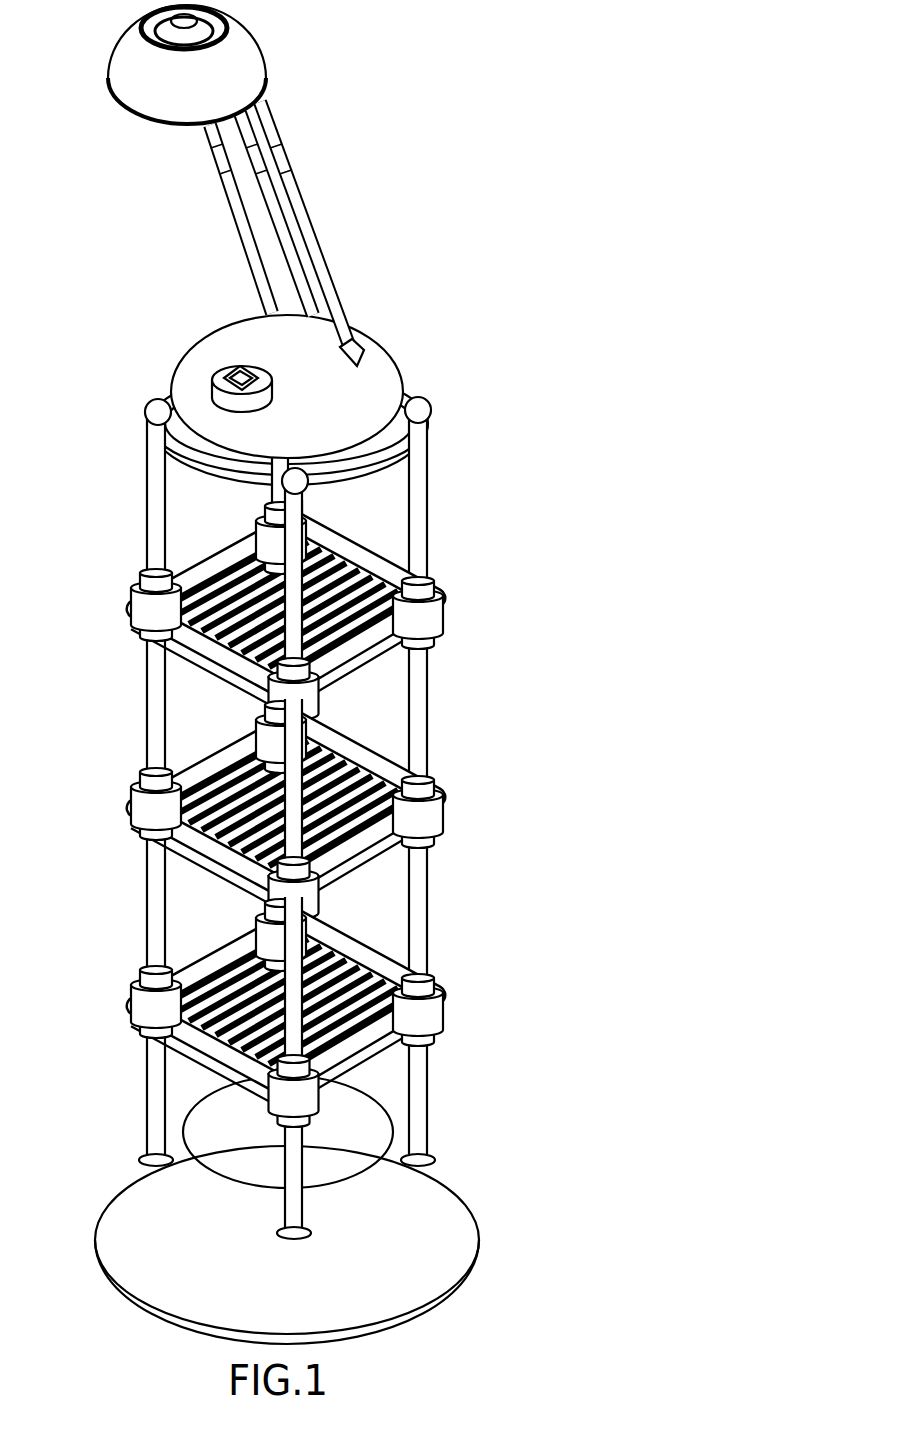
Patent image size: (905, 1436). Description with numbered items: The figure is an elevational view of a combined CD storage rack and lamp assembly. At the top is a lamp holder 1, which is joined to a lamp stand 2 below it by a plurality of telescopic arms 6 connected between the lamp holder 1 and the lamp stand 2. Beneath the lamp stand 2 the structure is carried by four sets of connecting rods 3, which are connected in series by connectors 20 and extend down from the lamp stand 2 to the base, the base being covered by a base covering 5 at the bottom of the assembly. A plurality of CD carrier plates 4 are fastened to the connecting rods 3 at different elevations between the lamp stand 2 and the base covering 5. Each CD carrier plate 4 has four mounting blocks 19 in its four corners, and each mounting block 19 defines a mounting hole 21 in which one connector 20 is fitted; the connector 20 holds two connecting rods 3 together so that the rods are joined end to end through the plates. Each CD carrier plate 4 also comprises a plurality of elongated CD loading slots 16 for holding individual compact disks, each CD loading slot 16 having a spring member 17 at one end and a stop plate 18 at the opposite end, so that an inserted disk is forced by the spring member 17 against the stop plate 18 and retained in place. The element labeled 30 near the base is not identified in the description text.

The lamp holder 1 is at (240, 60).
The lamp stand 2 is at (343, 395).
The connecting rods 3 is at (422, 552).
The CD carrier plates 4 is at (307, 786).
The base covering 5 is at (400, 1259).
The telescopic arms 6 is at (318, 253).
The CD loading slots 16 is at (237, 563).
The spring member 17 is at (372, 577).
The stop plate 18 is at (146, 632).
The mounting blocks 19 is at (422, 623).
The connectors 20 is at (420, 602).
The mounting hole 21 is at (433, 587).
The rod socket 30 is at (430, 1157).